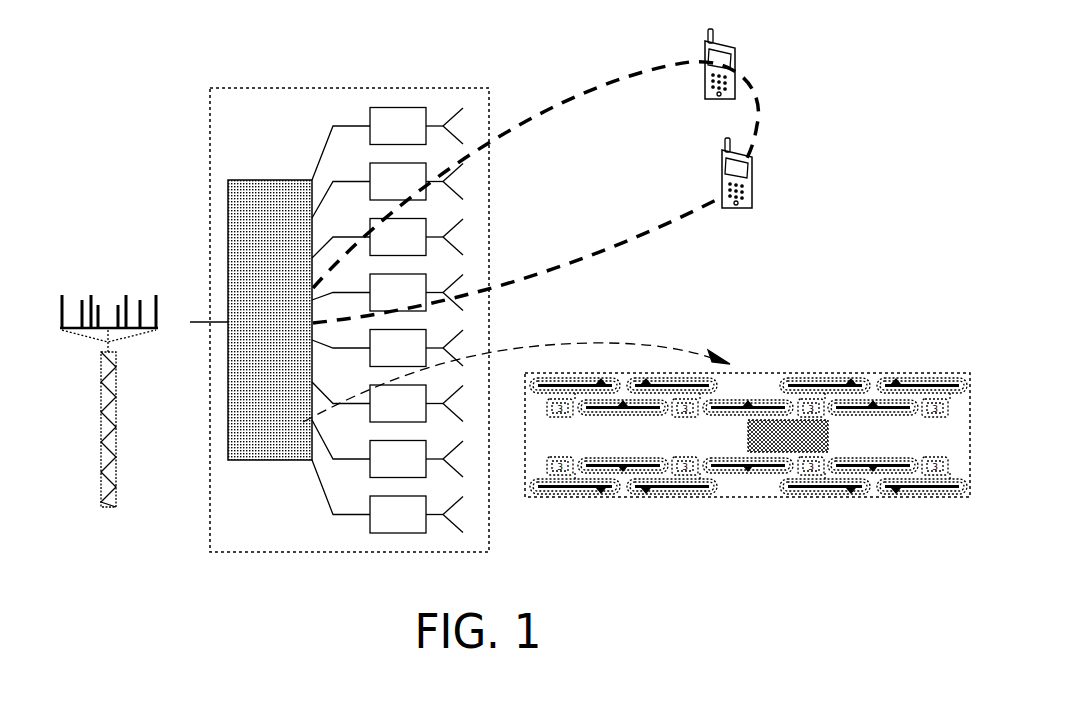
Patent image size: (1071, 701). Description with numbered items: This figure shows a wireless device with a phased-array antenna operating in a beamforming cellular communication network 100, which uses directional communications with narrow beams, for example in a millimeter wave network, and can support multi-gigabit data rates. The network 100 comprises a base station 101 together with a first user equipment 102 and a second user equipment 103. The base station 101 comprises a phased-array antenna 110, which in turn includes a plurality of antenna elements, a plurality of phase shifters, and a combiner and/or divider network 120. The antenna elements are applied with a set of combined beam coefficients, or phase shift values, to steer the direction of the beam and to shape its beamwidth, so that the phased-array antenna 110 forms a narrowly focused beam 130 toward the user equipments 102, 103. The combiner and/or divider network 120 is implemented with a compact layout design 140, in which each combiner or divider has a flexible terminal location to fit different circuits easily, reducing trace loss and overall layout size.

The beamforming cellular communication network 100 is at (140, 78).
The base station 101 is at (103, 297).
The first user equipment 102 is at (733, 44).
The second user equipment 103 is at (748, 210).
The phased-array antenna 110 is at (345, 88).
The combiner and/or divider network 120 is at (262, 462).
The beam 130 is at (627, 66).
The compact layout design 140 is at (885, 374).